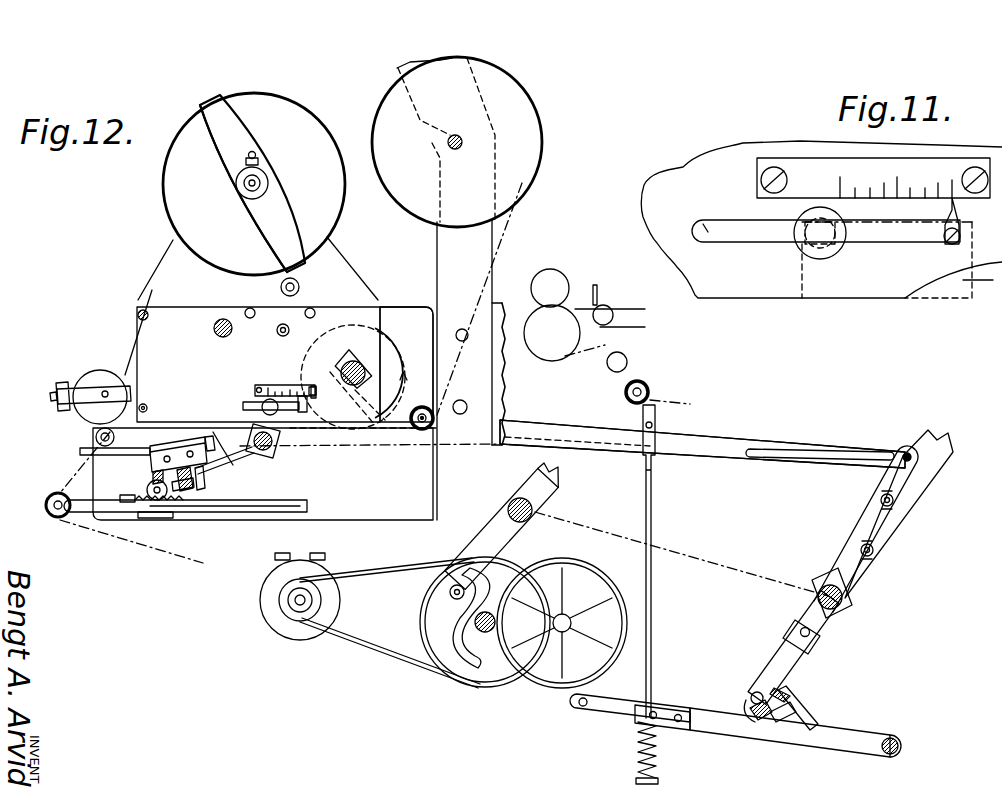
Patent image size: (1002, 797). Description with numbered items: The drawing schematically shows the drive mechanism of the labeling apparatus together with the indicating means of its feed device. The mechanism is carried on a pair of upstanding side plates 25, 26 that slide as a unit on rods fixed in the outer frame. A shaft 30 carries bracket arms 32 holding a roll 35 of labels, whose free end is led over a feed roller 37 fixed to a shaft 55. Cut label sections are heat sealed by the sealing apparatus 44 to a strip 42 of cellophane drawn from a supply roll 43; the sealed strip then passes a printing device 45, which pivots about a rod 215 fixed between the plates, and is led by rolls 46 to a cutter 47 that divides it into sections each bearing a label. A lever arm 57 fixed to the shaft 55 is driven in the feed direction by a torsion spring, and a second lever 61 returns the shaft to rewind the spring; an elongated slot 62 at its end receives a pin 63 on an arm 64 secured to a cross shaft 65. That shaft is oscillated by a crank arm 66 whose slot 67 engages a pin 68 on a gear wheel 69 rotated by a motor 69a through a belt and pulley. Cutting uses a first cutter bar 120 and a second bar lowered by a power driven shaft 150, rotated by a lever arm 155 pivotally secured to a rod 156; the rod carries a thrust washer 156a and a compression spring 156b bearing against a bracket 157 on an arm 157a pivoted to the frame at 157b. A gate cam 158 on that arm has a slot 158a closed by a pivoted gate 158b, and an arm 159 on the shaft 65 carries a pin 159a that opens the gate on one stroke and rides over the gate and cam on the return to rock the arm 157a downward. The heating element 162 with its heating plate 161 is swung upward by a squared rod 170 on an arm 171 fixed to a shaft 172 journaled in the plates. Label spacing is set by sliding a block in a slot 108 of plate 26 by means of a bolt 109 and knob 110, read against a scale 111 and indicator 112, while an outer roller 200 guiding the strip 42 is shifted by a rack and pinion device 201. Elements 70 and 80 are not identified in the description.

In FIG. 12, the side plate 25 is at (160, 253).
In FIG. 12, the side plate 26 is at (180, 318).
In FIG. 12, the shaft 30 is at (262, 183).
In FIG. 12, the bracket arms 32 is at (285, 213).
In FIG. 12, the roll of labels 35 is at (296, 134).
In FIG. 12, the feed roller 37 is at (382, 330).
In FIG. 12, the strip of thermoplastic material 42 is at (510, 233).
In FIG. 12, the supply roll 43 is at (520, 117).
In FIG. 12, the sealing apparatus 44 is at (142, 481).
In FIG. 12, the printing device 45 is at (88, 369).
In FIG. 12, the rolls 46 is at (648, 375).
In FIG. 12, the cutter 47 is at (611, 297).
In FIG. 12, the shaft 55 is at (365, 362).
In FIG. 12, the lever arm 57 is at (385, 348).
In FIG. 12, the second lever 61 is at (738, 435).
In FIG. 12, the elongated slot 62 is at (836, 447).
In FIG. 12, the pin 63 is at (906, 450).
In FIG. 12, the arm 64 is at (883, 526).
In FIG. 12, the cross shaft 65 is at (512, 501).
In FIG. 12, the crank arm 66 is at (487, 536).
In FIG. 12, the slot 67 is at (440, 643).
In FIG. 12, the pin 68 is at (450, 593).
In FIG. 12, the gear wheel 69 is at (505, 691).
In FIG. 12, the motor 69a is at (293, 633).
In FIG. 12, the rail 70 is at (318, 433).
In FIG. 12, the roller 80 is at (248, 308).
In FIG. 12, the slot 108 is at (240, 407).
In FIG. 11, the slot 108 is at (713, 233).
In FIG. 11, the bolt 109 is at (797, 247).
In FIG. 12, the knob 110 is at (265, 401).
In FIG. 11, the knob 110 is at (832, 251).
In FIG. 12, the scale 111 is at (281, 383).
In FIG. 11, the scale 111 is at (940, 169).
In FIG. 12, the indicator 112 is at (315, 396).
In FIG. 12, the first cutter bar 120 is at (258, 457).
In FIG. 12, the power driven shaft 150 is at (219, 337).
In FIG. 12, the lever arm 155 is at (580, 420).
In FIG. 12, the rod 156 is at (652, 511).
In FIG. 12, the thrust washer 156a is at (636, 782).
In FIG. 12, the compression spring 156b is at (636, 751).
In FIG. 12, the bracket 157 is at (668, 708).
In FIG. 12, the arm 157a is at (812, 746).
In FIG. 12, the pivot 157b is at (900, 753).
In FIG. 12, the gate cam 158 is at (758, 723).
In FIG. 12, the slot 158a is at (783, 725).
In FIG. 12, the gate 158b is at (806, 717).
In FIG. 12, the arm 159 is at (795, 659).
In FIG. 12, the pin 159a is at (753, 693).
In FIG. 12, the heating plate 161 is at (197, 434).
In FIG. 12, the heating element 162 is at (150, 458).
In FIG. 12, the squared rod 170 is at (188, 500).
In FIG. 12, the arm 171 is at (206, 470).
In FIG. 12, the shaft 172 is at (252, 455).
In FIG. 12, the outer roller 200 is at (63, 518).
In FIG. 12, the rack and pinion device 201 is at (212, 487).
In FIG. 12, the rod 215 is at (147, 404).